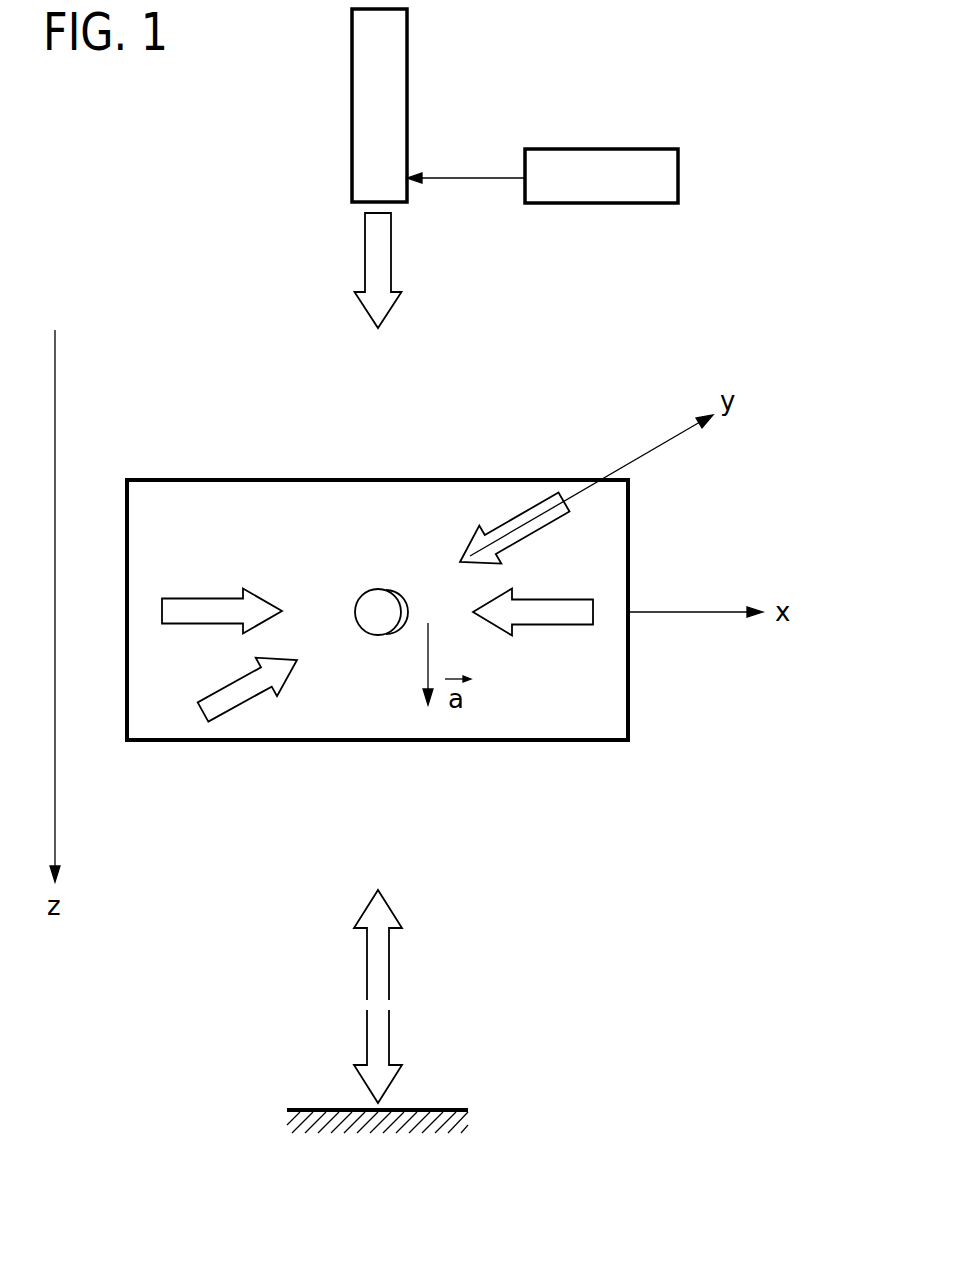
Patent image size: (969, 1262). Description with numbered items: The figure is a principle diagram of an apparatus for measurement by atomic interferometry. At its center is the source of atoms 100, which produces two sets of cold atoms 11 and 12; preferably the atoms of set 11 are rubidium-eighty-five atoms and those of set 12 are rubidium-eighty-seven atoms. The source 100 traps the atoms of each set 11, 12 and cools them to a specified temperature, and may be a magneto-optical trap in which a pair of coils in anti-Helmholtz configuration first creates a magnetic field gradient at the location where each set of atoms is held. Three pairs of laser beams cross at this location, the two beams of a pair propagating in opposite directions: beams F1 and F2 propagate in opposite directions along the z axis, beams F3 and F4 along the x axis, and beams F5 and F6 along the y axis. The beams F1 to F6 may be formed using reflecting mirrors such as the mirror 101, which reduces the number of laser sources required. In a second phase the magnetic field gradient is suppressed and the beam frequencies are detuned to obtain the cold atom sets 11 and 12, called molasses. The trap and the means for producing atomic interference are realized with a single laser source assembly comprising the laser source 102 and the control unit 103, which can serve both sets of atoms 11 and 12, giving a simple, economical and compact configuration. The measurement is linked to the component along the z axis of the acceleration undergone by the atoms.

The source of atoms 100 is at (222, 478).
The mirror 101 is at (428, 1109).
The laser source 102 is at (407, 52).
The control unit 103 is at (628, 148).
The set of cold atoms 11 is at (362, 598).
The set of cold atoms 12 is at (405, 597).
The laser beam F1 is at (392, 262).
The laser beam F2 is at (390, 977).
The laser beam F3 is at (196, 600).
The laser beam F4 is at (560, 600).
The laser beam F5 is at (218, 688).
The laser beam F6 is at (500, 522).